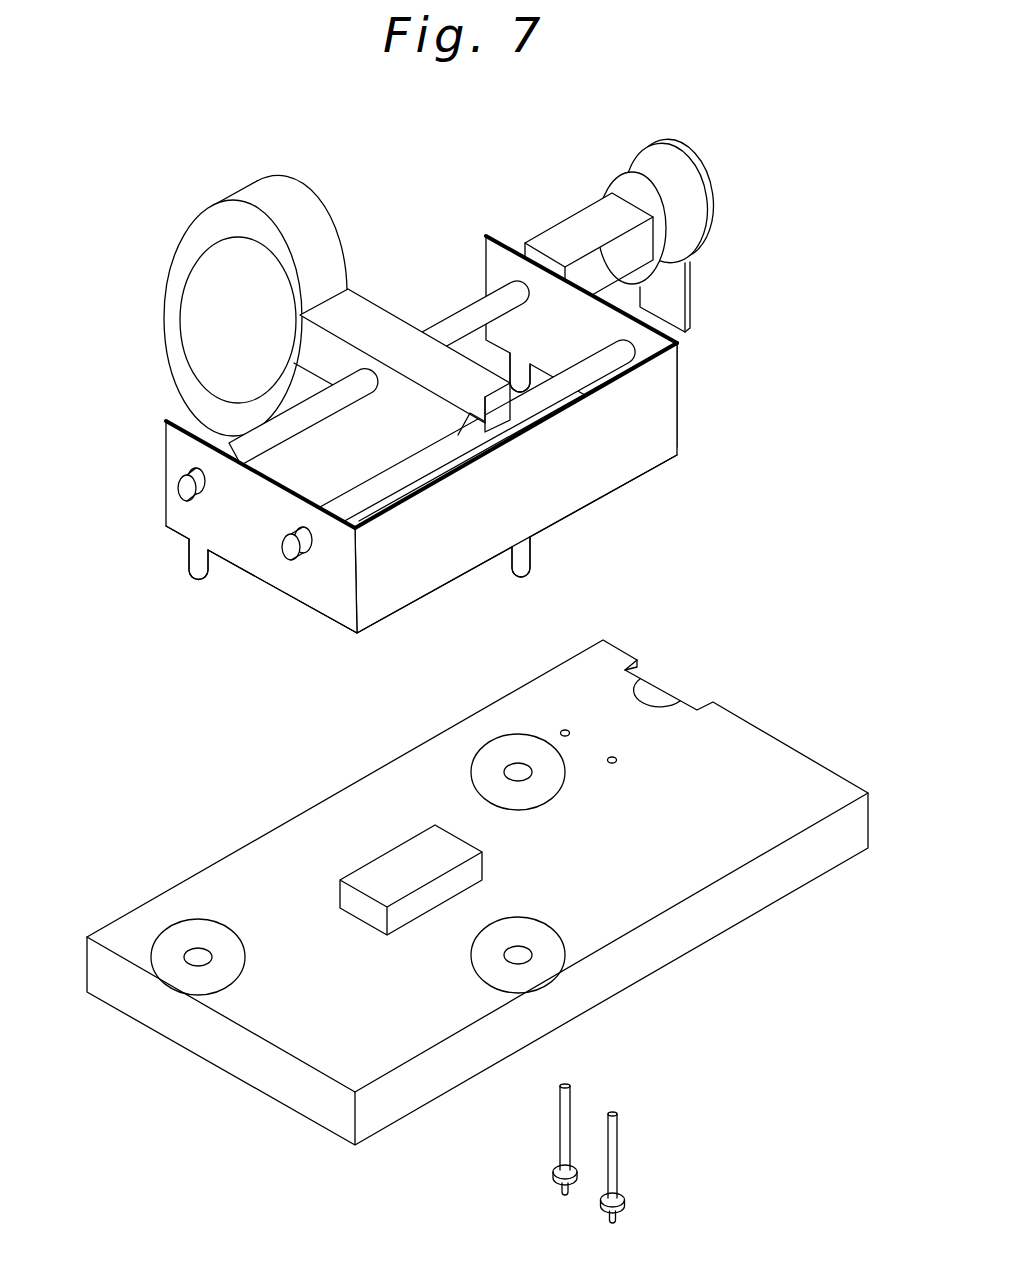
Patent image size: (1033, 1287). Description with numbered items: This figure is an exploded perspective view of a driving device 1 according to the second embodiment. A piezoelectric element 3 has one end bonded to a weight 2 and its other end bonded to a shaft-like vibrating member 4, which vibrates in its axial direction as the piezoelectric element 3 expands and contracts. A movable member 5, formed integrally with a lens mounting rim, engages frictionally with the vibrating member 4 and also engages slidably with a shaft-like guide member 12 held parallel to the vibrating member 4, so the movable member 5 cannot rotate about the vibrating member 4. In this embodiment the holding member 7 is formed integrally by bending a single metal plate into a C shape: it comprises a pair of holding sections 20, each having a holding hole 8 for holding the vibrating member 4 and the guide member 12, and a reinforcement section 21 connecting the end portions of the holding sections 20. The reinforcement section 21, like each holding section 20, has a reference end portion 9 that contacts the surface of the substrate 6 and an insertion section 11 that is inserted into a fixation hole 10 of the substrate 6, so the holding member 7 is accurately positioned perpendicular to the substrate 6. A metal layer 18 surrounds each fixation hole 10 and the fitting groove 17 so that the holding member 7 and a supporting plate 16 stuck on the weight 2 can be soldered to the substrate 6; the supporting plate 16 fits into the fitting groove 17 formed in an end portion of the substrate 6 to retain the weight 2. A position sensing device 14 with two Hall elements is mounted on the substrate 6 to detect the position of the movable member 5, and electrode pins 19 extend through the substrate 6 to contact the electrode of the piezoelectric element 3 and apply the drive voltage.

The driving device 1 is at (426, 375).
The weight 2 is at (651, 150).
The piezoelectric element 3 is at (577, 232).
The vibrating member 4 is at (450, 318).
The movable member 5 is at (365, 343).
The substrate 6 is at (477, 871).
The holding member 7 is at (505, 236).
The holding hole 8 is at (183, 470).
The reference end portion 9 is at (176, 536).
The fixation hole 10 is at (195, 948).
The insertion section 11 is at (196, 562).
The guide member 12 is at (383, 488).
The position sensing device 14 is at (400, 855).
The supporting plate 16 is at (690, 312).
The fitting groove 17 is at (697, 704).
The metal layer 18 is at (160, 930).
The electrode pin 19 is at (558, 1150).
The holding section 20 is at (556, 338).
The reinforcement section 21 is at (601, 453).